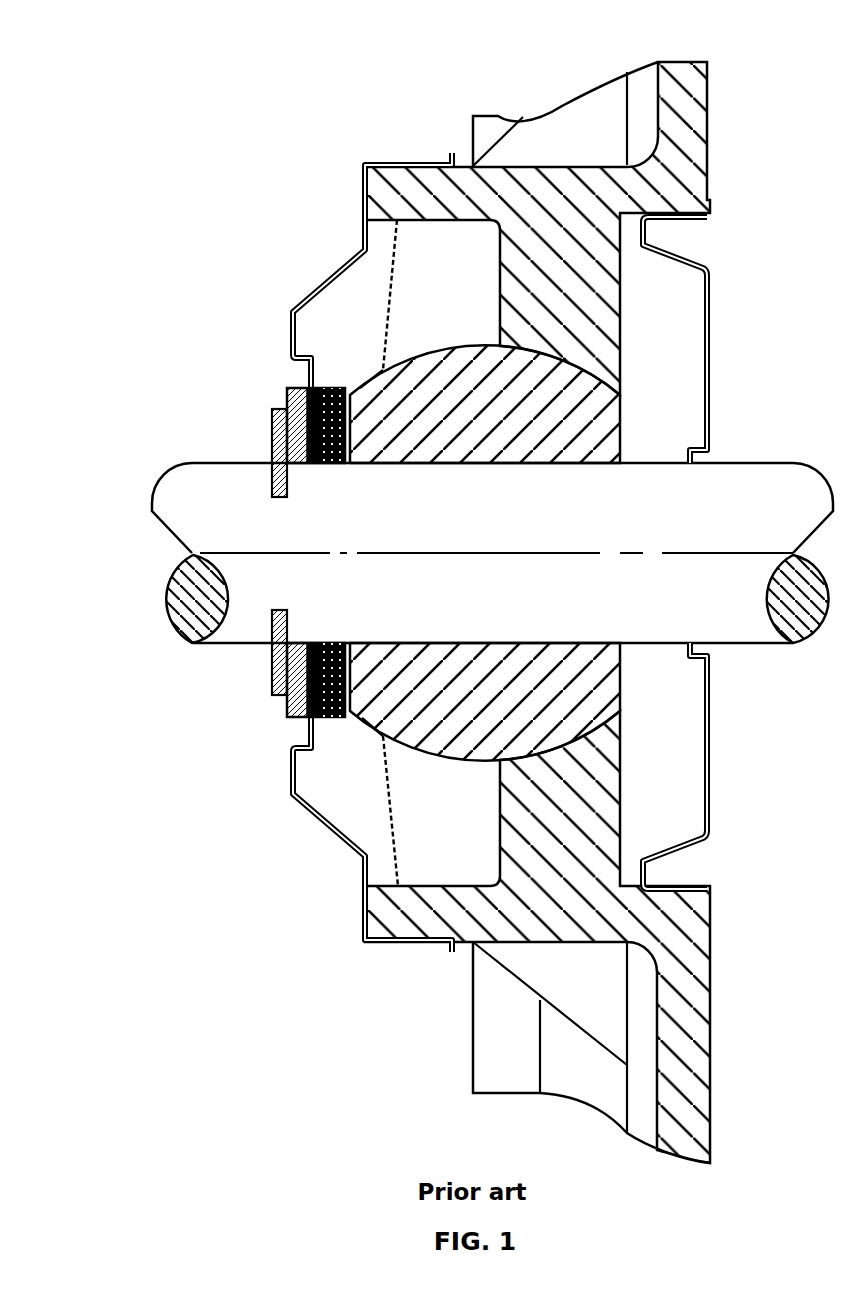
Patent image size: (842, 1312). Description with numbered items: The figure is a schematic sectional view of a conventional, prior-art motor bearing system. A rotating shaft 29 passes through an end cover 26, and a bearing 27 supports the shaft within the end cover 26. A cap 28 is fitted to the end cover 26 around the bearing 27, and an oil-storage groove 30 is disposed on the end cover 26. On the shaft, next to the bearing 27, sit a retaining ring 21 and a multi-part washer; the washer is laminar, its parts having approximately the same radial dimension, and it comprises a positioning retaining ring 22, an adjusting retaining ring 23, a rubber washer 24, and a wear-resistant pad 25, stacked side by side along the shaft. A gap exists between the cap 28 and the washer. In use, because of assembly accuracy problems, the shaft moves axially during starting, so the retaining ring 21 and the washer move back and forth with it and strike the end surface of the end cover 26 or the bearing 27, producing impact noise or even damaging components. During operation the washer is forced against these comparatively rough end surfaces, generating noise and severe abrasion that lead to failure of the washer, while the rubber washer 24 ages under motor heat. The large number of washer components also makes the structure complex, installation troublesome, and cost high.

The retaining ring 21 is at (272, 412).
The positioning retaining ring 22 is at (288, 405).
The adjusting retaining ring 23 is at (302, 388).
The rubber washer 24 is at (312, 388).
The wear-resistant pad 25 is at (337, 388).
The end cover 26 is at (560, 195).
The bearing 27 is at (478, 450).
The cap 28 is at (345, 255).
The rotating shaft 29 is at (245, 535).
The oil-storage groove 30 is at (435, 815).